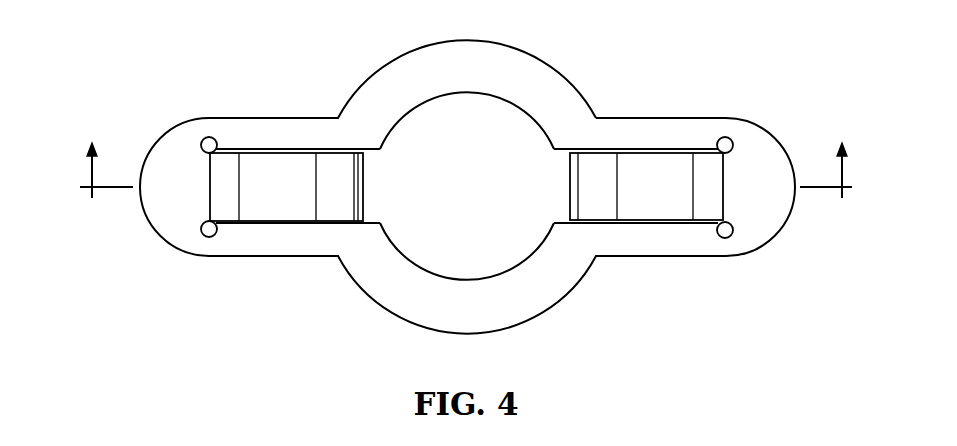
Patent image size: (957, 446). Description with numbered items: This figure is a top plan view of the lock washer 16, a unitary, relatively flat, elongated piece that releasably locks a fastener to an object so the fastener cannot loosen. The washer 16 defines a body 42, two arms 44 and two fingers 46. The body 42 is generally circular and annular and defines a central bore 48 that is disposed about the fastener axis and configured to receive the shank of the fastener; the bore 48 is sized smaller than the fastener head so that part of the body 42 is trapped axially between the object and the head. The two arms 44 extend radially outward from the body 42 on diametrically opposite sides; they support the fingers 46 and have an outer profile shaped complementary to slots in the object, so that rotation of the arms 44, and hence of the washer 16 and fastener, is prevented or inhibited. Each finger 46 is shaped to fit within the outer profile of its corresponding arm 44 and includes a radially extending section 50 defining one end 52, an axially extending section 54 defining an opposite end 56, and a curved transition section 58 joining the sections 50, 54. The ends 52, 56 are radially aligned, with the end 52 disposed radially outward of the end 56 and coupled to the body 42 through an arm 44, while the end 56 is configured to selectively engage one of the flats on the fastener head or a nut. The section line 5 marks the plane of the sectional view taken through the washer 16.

The washer 16 is at (688, 100).
The body 42 is at (555, 277).
The arm 44 is at (750, 218).
The finger 46 is at (657, 203).
The bore 48 is at (523, 147).
The radially extending section 50 is at (680, 185).
The end 52 is at (728, 196).
The axially extending section 54 is at (602, 172).
The end 56 is at (560, 185).
The curved transition section 58 is at (573, 167).
The section line 5- 5 is at (466, 157).